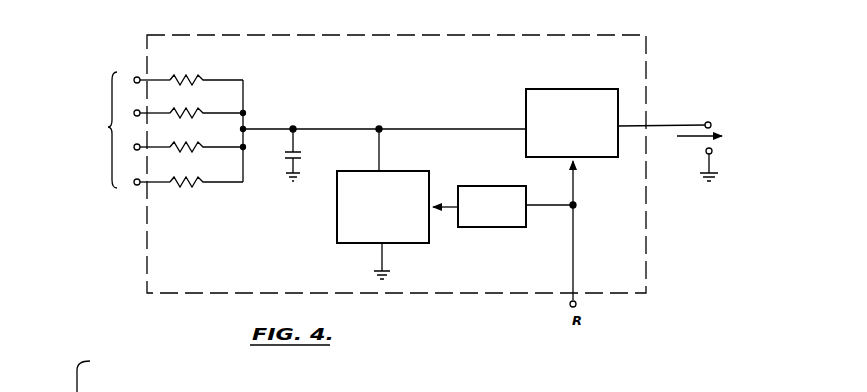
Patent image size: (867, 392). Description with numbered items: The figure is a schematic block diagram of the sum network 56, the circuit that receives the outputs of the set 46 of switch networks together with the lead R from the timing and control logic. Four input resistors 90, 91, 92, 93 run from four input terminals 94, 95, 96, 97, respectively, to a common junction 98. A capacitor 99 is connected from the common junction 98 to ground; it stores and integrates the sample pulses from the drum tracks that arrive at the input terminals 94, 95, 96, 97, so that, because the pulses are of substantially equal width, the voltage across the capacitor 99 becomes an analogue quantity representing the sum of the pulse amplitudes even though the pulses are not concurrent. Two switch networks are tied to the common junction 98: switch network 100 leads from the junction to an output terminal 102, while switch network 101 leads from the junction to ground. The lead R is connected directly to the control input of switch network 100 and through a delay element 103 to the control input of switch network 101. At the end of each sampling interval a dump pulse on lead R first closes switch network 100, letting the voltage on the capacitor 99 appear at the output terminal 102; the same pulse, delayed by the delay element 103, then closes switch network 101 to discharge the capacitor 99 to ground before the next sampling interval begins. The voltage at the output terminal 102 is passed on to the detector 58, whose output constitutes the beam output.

The sum network 56 is at (525, 32).
The set of switch networks 46 is at (77, 130).
The input resistor 90 is at (178, 73).
The input resistor 91 is at (181, 107).
The input resistor 92 is at (181, 141).
The input resistor 93 is at (181, 176).
The input terminal 94 is at (135, 78).
The input terminal 95 is at (135, 111).
The input terminal 96 is at (135, 145).
The input terminal 97 is at (135, 180).
The common junction 98 is at (293, 127).
The capacitor 99 is at (288, 163).
The switch network 100 is at (566, 92).
The switch network 101 is at (338, 229).
The output terminal 102 is at (706, 120).
The delay element 103 is at (500, 228).
The detector 58 is at (742, 127).